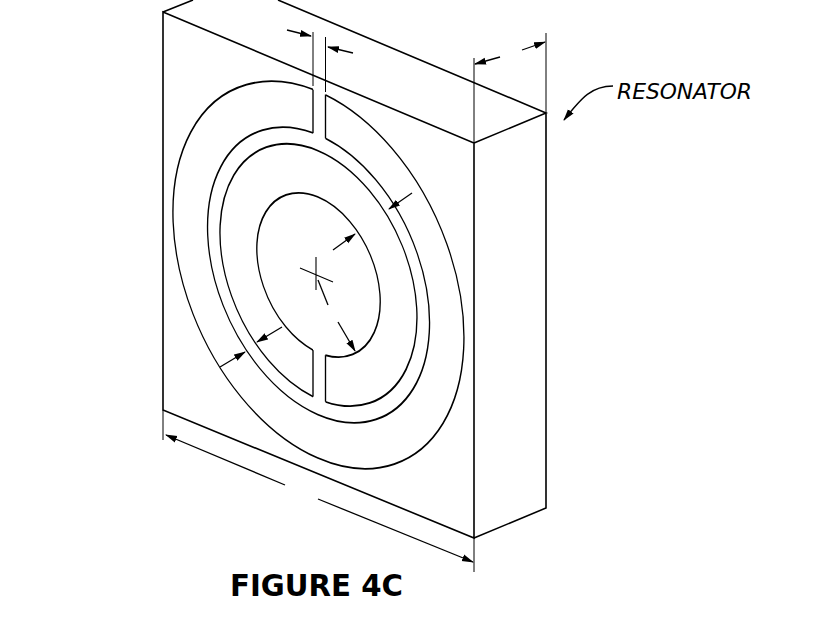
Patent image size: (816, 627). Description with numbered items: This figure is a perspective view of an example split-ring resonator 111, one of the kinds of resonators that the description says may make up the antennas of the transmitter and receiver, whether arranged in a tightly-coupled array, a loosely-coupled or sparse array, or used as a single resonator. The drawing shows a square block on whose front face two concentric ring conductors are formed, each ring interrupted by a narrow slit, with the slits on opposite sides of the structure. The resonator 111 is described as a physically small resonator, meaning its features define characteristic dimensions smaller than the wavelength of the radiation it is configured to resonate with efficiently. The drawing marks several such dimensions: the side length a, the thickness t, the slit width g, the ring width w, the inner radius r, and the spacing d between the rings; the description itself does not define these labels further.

The split-ring resonator 111 is at (181, 72).
The resonator side length a is at (318, 491).
The resonator thickness t is at (510, 88).
The split gap width g is at (328, 61).
The ring width w is at (372, 221).
The inner radius r is at (336, 315).
The ring spacing d is at (249, 347).